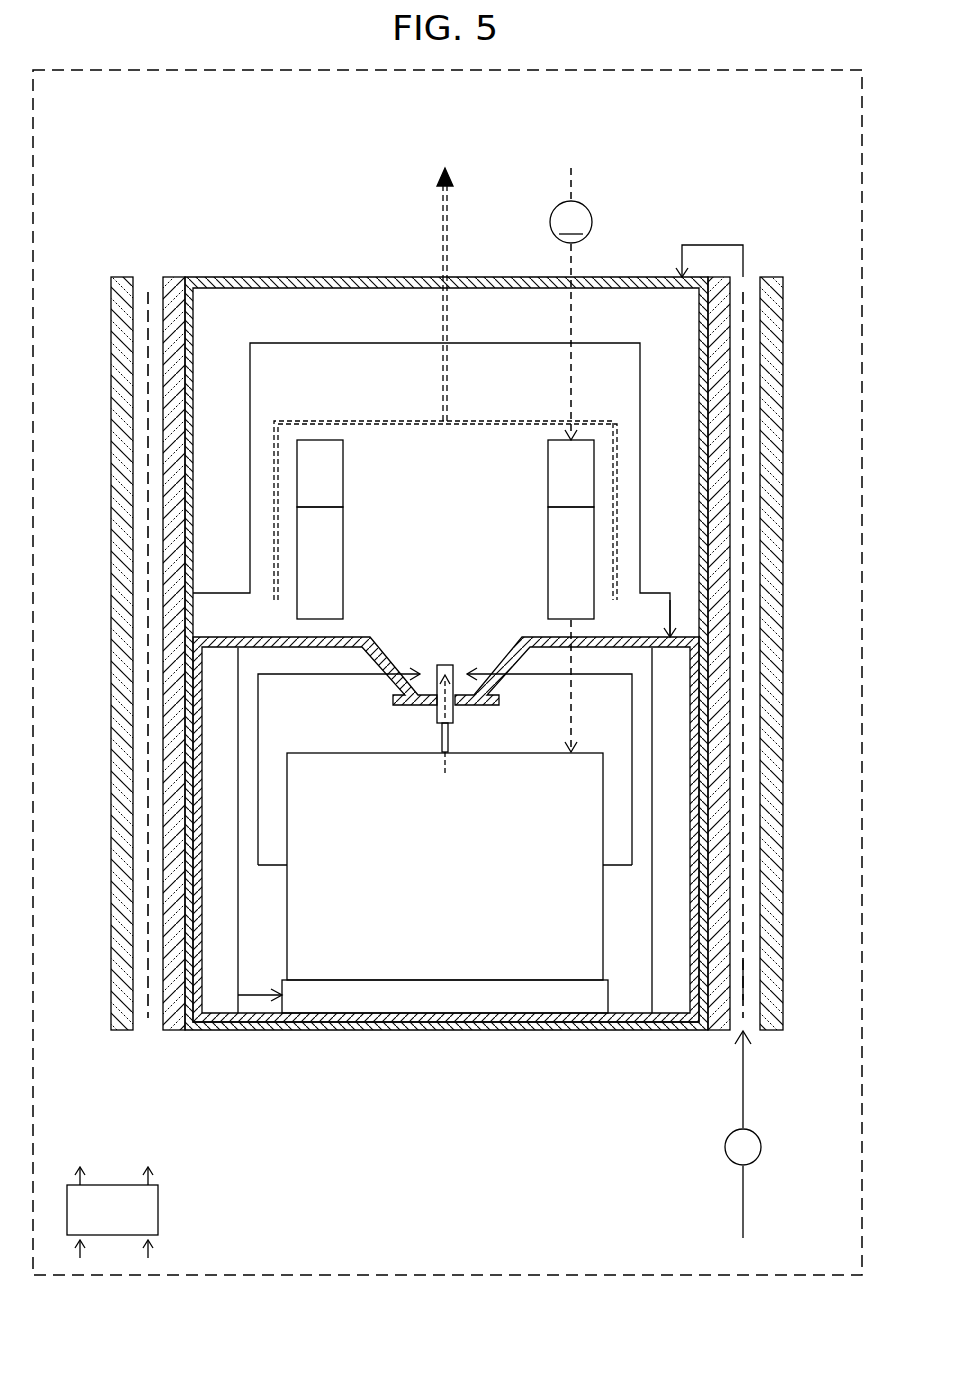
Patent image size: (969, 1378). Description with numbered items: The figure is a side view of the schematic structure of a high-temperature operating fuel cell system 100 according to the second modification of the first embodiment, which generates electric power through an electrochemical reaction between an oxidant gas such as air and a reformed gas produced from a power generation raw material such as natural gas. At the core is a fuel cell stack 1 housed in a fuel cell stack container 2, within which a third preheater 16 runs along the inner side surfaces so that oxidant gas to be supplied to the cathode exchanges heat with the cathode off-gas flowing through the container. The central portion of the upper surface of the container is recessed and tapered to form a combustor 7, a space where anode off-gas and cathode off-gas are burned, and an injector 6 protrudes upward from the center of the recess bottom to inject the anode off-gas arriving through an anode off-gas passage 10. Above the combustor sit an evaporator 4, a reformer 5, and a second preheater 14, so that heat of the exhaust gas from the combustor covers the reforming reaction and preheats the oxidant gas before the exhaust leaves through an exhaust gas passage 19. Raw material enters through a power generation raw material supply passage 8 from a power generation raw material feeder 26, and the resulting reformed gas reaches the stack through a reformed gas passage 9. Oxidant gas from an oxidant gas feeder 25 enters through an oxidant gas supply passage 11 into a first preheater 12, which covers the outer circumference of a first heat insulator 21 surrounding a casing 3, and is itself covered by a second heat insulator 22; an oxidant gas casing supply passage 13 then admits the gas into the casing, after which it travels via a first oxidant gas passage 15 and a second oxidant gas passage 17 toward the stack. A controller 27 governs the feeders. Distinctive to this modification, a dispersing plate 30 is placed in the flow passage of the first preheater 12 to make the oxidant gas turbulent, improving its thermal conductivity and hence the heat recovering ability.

The high-temperature operating fuel cell system 100 is at (169, 182).
The fuel cell stack 1 is at (452, 882).
The fuel cell stack container 2 is at (355, 636).
The casing 3 is at (268, 276).
The evaporator 4 is at (313, 492).
The reformer 5 is at (313, 578).
The injector 6 is at (433, 663).
The combustor 7 is at (451, 631).
The power generation raw material supply passage 8 is at (566, 386).
The reformed gas passage 9 is at (572, 712).
The anode off-gas passage 10 is at (443, 730).
The oxidant gas supply passage 11 is at (744, 1196).
The first preheater 12 is at (136, 906).
The oxidant gas casing supply passage 13 is at (744, 260).
The second preheater 14 is at (306, 328).
The first oxidant gas passage 15 is at (672, 608).
The third preheater 16 is at (208, 906).
The second oxidant gas passage 17 is at (256, 994).
The exhaust gas passage 19 is at (440, 386).
The first heat insulator 21 is at (175, 1032).
The second heat insulator 22 is at (120, 1032).
The oxidant gas feeder 25 is at (415, 1148).
The power generation raw material feeder 26 is at (386, 630).
The controller 27 is at (100, 1223).
The dispersing plate 30 is at (746, 989).